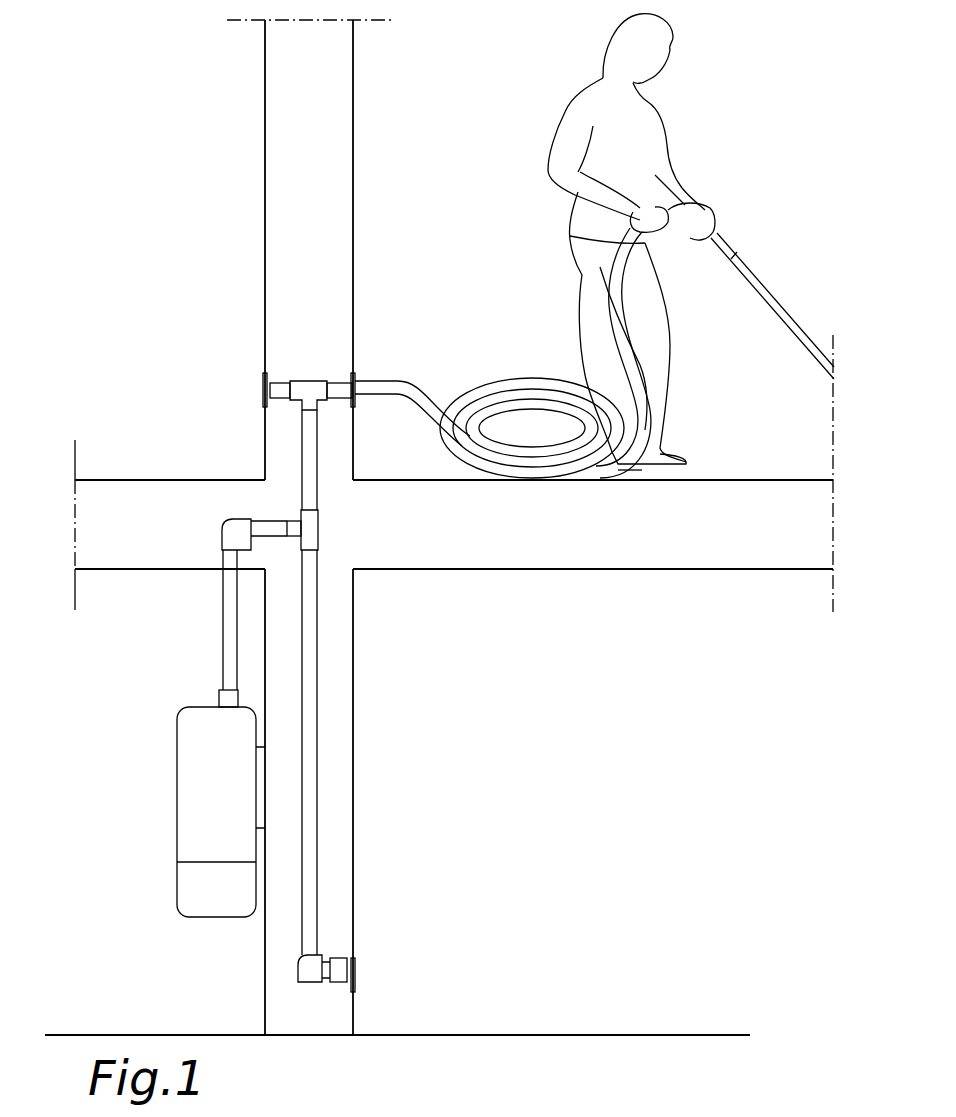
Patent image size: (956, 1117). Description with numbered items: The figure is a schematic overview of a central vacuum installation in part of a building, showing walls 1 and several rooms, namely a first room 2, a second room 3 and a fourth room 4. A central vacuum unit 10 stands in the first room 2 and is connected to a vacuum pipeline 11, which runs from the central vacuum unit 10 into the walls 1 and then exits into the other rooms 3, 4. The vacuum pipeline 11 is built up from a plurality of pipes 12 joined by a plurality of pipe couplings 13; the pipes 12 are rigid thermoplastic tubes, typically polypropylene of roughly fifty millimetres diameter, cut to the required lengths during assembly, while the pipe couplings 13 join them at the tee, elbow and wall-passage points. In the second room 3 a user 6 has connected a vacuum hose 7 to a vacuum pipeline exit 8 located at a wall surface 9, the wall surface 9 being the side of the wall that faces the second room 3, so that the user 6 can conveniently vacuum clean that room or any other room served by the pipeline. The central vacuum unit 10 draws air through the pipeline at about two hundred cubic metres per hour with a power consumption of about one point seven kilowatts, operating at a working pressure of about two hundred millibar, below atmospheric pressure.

The walls 1 is at (282, 144).
The first room 2 is at (128, 714).
The second room 3 is at (484, 166).
The fourth room 4 is at (528, 739).
The user 6 is at (607, 80).
The vacuum hose 7 is at (462, 375).
The vacuum pipeline exit 8 is at (263, 402).
The wall surface 9 is at (355, 300).
The central vacuum unit 10 is at (190, 790).
The vacuum pipeline 11 is at (228, 637).
The pipes 12 is at (270, 520).
The pipe couplings 13 is at (318, 393).